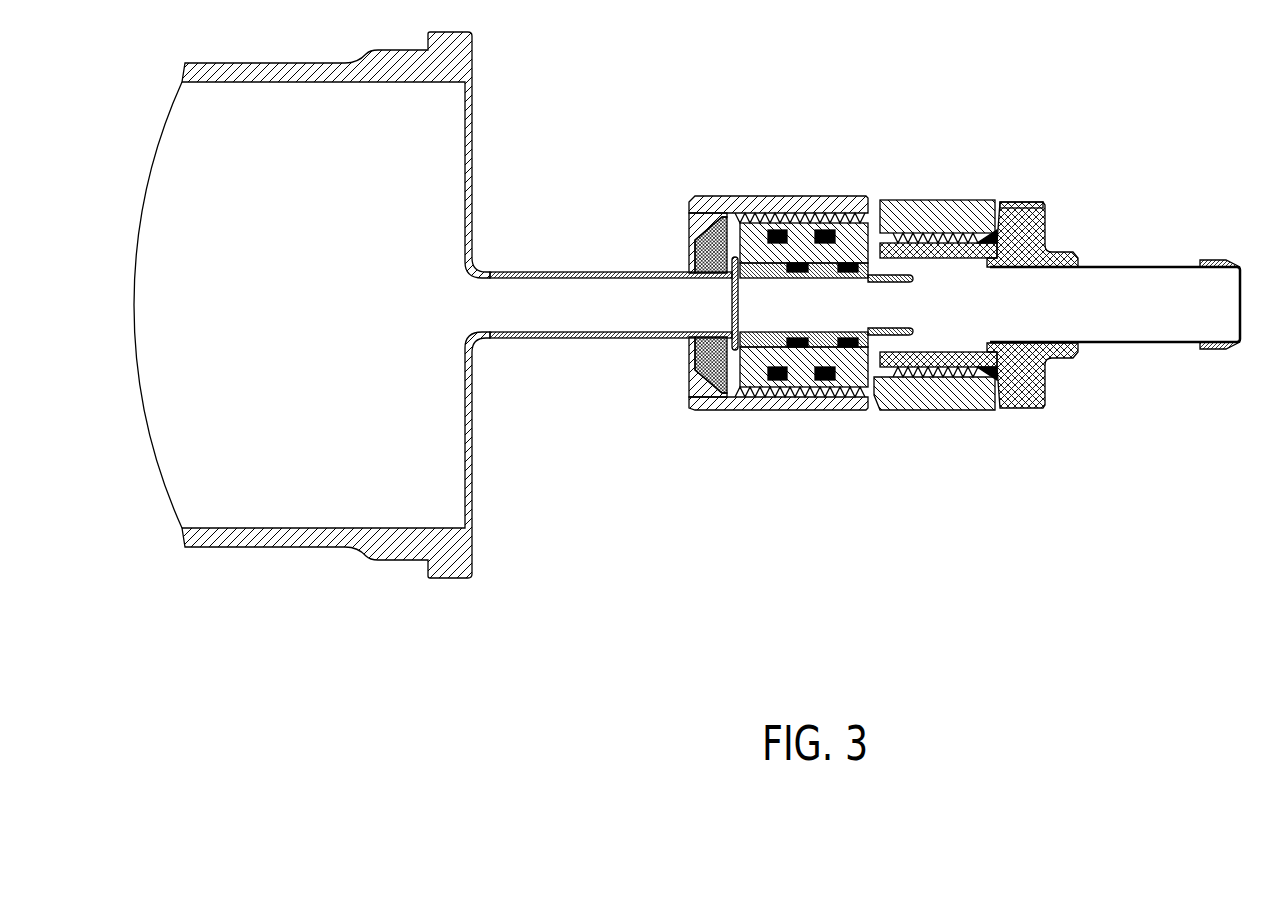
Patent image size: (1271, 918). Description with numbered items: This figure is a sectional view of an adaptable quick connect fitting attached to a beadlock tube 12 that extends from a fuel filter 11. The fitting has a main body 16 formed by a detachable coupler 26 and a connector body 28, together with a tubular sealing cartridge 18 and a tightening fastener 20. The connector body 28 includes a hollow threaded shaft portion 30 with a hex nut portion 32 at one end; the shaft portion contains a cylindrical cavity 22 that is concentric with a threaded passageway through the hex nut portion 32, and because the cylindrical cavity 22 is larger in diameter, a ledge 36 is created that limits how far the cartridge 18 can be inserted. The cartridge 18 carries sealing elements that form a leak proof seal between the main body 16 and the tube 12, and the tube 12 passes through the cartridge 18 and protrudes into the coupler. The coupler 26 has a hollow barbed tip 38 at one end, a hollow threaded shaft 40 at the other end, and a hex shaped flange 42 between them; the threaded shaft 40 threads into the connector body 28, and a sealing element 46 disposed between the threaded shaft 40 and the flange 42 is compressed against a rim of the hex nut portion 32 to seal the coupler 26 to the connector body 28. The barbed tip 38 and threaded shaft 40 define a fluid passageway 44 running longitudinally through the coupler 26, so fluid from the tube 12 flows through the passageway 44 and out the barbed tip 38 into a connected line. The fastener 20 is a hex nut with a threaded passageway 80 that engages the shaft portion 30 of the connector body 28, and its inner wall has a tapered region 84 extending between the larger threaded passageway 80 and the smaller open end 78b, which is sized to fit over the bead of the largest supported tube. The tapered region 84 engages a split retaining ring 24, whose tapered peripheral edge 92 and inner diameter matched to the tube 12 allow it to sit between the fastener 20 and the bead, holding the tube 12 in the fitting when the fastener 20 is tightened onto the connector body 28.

The fuel filter 11 is at (341, 497).
The tube 12 is at (555, 295).
The main body 16 is at (1023, 172).
The sealing cartridge 18 is at (848, 225).
The fastener 20 is at (720, 212).
The cylindrical cavity 22 is at (840, 380).
The retaining ring 24 is at (690, 358).
The detachable coupler 26 is at (1057, 390).
The connector body 28 is at (947, 427).
The threaded shaft portion 30 is at (750, 392).
The hex nut portion 32 is at (922, 402).
The ledge 36 is at (887, 235).
The threaded shaft 40 is at (945, 238).
The flange 42 is at (1028, 388).
The fluid passageway 44 is at (1177, 310).
The sealing element 46 is at (997, 237).
The barbed tip 38 is at (1220, 262).
The open end 78b is at (683, 255).
The threaded passageway 80 is at (795, 225).
The tapered region 84 is at (700, 383).
The tapered peripheral edge 92 is at (688, 222).